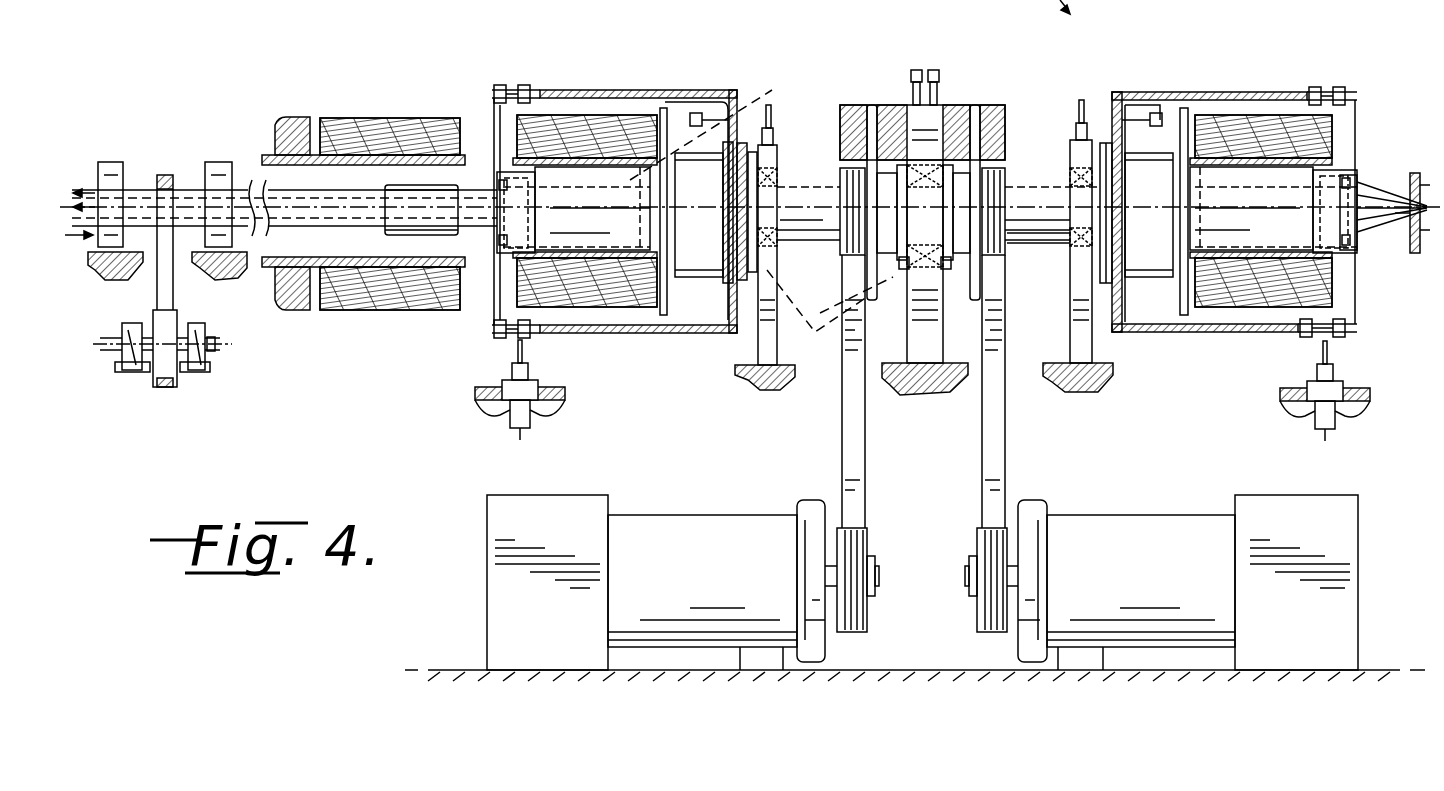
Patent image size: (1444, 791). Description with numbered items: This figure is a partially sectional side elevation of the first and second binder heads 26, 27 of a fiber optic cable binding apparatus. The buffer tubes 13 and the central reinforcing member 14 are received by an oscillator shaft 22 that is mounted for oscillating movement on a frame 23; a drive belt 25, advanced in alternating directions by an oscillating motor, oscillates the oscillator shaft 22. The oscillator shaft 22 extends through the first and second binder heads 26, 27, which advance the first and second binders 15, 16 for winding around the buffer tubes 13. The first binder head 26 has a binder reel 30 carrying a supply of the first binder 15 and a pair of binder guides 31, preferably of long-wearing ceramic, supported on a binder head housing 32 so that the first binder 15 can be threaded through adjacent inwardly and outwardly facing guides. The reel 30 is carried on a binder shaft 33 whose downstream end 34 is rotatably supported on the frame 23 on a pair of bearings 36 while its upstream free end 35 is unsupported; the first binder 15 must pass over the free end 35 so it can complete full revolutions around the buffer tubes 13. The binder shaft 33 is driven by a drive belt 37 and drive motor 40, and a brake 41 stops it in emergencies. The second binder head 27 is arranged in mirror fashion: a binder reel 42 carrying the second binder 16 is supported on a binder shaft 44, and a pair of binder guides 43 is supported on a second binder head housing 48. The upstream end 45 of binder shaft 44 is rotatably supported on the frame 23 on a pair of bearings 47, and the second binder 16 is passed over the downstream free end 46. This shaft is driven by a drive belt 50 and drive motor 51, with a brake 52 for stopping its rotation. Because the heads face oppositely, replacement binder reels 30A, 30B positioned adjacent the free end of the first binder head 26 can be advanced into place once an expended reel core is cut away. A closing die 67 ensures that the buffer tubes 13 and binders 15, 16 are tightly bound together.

The buffer tubes 13 is at (74, 192).
The central reinforcing member 14 is at (105, 175).
The first binder 15 is at (497, 172).
The second binder 16 is at (1350, 172).
The oscillator shaft 22 is at (442, 185).
The frame 23 is at (125, 275).
The drive belt 25 is at (168, 300).
The first binder head 26 is at (598, 202).
The second binder head 27 is at (1263, 193).
The binder reel 30 is at (600, 160).
The replacement binder reel 30A is at (288, 117).
The replacement binder reel 30B is at (365, 125).
The binder guides 31 is at (522, 90).
The binder head housing 32 is at (585, 90).
The binder shaft 33 is at (770, 168).
The downstream end 34 is at (808, 232).
The upstream free end 35 is at (500, 260).
The bearings 36 is at (761, 227).
The drive belt 37 is at (845, 452).
The drive motor 40 is at (718, 515).
The brake 41 is at (941, 201).
The binder reel 42 is at (1215, 125).
The binder guides 43 is at (1327, 88).
The binder shaft 44 is at (1048, 230).
The upstream end 45 is at (1022, 190).
The downstream free end 46 is at (1340, 170).
The bearings 47 is at (925, 268).
The second binder head housing 48 is at (1228, 332).
The drive belt 50 is at (1000, 438).
The drive motor 51 is at (1105, 525).
The brake 52 is at (993, 107).
The closing die 67 is at (1413, 240).